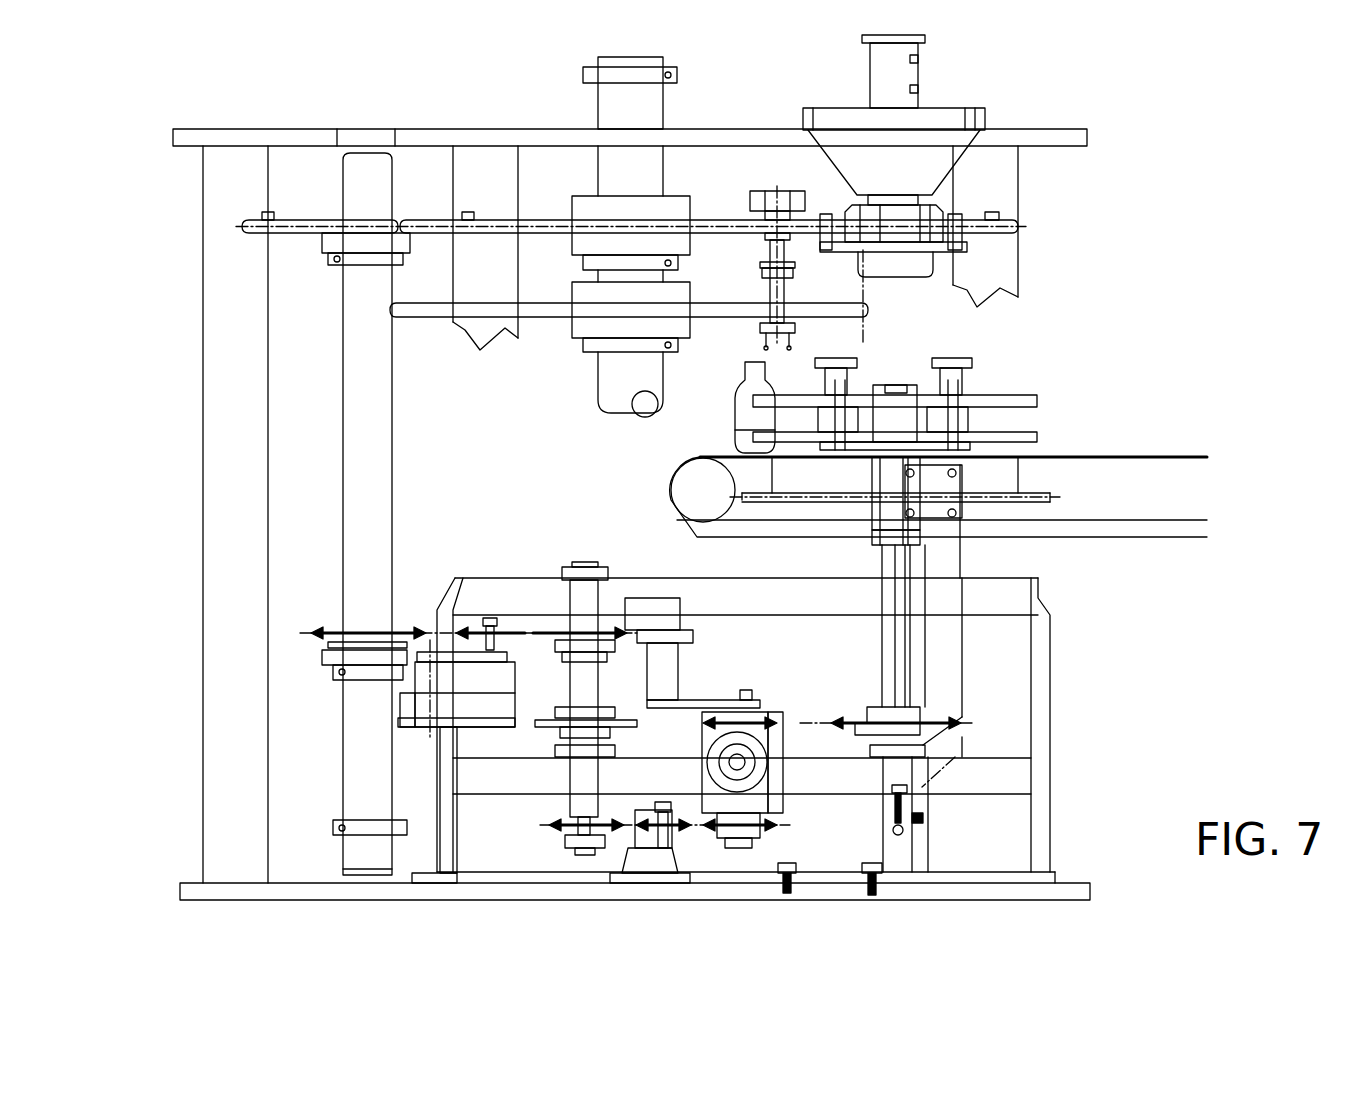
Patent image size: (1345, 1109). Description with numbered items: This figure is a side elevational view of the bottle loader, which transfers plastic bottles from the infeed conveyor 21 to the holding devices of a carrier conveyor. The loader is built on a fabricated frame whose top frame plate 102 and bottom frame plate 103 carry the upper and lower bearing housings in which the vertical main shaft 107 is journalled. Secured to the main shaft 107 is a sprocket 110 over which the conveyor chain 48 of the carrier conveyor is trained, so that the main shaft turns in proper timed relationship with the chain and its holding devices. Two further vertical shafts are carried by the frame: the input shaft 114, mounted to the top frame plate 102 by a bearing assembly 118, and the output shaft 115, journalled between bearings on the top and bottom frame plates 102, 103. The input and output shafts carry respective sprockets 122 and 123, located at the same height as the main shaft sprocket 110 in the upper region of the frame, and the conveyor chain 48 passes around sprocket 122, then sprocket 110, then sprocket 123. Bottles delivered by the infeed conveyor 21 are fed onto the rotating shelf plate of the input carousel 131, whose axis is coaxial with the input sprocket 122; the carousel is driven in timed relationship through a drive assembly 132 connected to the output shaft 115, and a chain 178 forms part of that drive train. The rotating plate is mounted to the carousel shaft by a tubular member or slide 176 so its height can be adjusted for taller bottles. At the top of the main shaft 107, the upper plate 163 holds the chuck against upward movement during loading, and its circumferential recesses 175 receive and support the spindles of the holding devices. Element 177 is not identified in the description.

The infeed conveyor 21 is at (1130, 456).
The conveyor chain 48 is at (770, 238).
The top frame plate 102 is at (437, 96).
The bottom frame plate 103 is at (200, 882).
The vertical main shaft 107 is at (665, 103).
The main shaft sprocket 110 is at (540, 218).
The input shaft 114 is at (920, 198).
The output shaft 115 is at (343, 398).
The bearing assembly 118 is at (946, 107).
The input shaft sprocket 122 is at (994, 236).
The output shaft sprocket 123 is at (303, 218).
The input carousel 131 is at (1036, 365).
The drive assembly 132 is at (985, 735).
The top plate 163 is at (533, 328).
The recesses 175 is at (396, 322).
The tubular member or slide 176 is at (537, 723).
The horizontal shaft 177 is at (848, 718).
The chain 178 is at (800, 722).